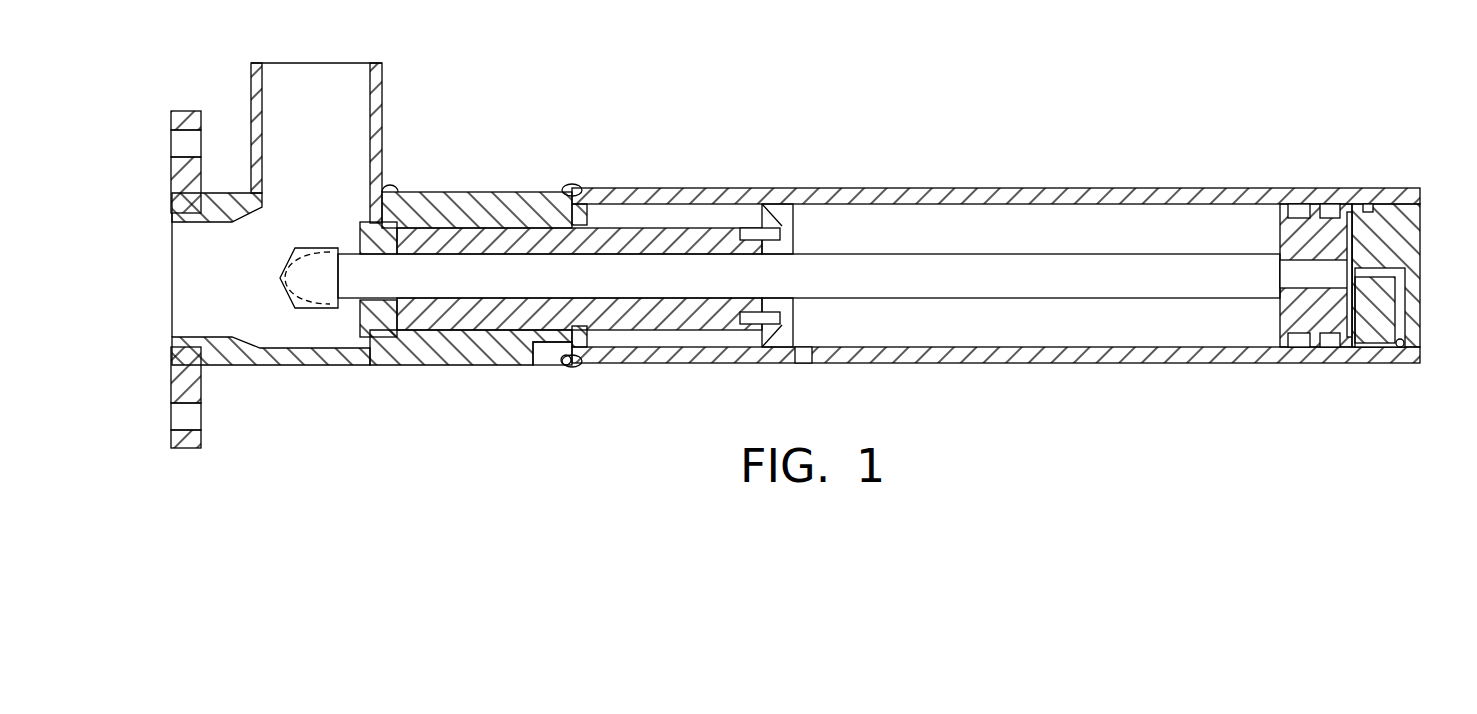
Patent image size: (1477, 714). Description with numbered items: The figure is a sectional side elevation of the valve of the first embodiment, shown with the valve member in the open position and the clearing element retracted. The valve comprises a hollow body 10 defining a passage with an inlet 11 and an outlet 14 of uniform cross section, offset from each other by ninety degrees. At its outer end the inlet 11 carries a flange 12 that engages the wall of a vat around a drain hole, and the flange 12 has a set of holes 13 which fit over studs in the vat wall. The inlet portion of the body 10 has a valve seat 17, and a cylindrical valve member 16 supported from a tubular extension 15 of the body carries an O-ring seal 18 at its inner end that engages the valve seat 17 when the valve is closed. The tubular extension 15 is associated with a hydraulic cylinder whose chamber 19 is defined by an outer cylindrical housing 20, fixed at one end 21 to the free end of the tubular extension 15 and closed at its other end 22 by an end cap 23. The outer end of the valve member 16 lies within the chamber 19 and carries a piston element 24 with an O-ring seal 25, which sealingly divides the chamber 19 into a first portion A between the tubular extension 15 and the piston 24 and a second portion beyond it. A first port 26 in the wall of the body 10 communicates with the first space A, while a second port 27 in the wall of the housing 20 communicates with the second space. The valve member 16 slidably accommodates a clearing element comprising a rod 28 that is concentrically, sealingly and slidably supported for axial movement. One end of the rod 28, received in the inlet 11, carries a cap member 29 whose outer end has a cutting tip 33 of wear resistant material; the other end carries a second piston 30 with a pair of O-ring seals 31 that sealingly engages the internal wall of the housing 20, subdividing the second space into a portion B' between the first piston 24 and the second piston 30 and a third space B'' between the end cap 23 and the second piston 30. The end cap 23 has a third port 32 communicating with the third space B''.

The hollow body 10 is at (476, 115).
The inlet 11 is at (233, 257).
The flange 12 is at (180, 194).
The holes 13 is at (192, 140).
The outlet 14 is at (353, 80).
The tubular extension 15 is at (553, 190).
The valve member 16 is at (636, 227).
The valve seat 17 is at (215, 222).
The O-ring seal 18 is at (400, 193).
The chamber 19 is at (952, 210).
The outer cylindrical housing 20 is at (1048, 200).
The one end 21 is at (588, 188).
The other end 22 is at (1378, 196).
The end cap 23 is at (1400, 245).
The piston element 24 is at (800, 212).
The O-ring seal 25 is at (777, 205).
The first port 26 is at (543, 352).
The second port 27 is at (797, 352).
The rod 28 is at (1045, 282).
The cap member 29 is at (352, 300).
The second piston 30 is at (1330, 303).
The O-ring seals 31 is at (1330, 206).
The third port 32 is at (1398, 312).
The cutting tip 33 is at (315, 308).
The first portion A is at (703, 340).
The portion B' is at (987, 387).
The third space B'' is at (1412, 255).